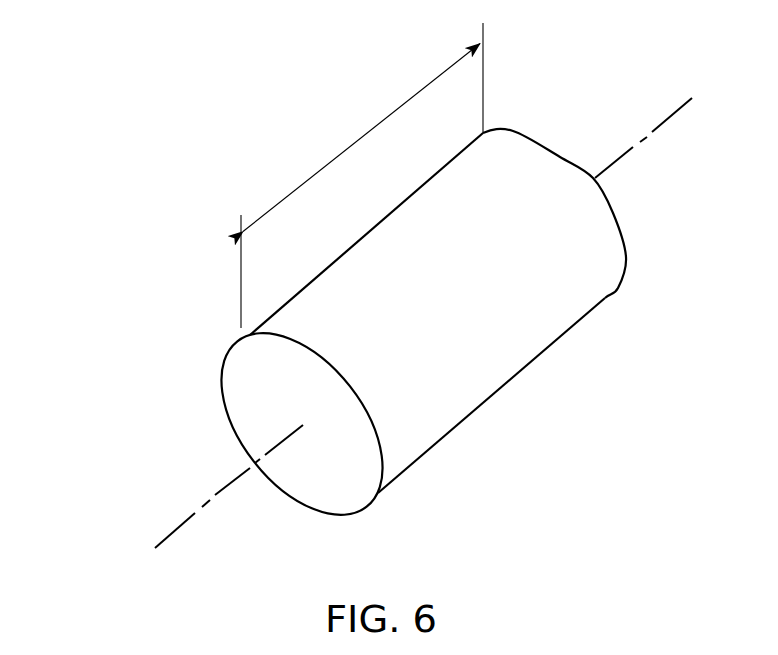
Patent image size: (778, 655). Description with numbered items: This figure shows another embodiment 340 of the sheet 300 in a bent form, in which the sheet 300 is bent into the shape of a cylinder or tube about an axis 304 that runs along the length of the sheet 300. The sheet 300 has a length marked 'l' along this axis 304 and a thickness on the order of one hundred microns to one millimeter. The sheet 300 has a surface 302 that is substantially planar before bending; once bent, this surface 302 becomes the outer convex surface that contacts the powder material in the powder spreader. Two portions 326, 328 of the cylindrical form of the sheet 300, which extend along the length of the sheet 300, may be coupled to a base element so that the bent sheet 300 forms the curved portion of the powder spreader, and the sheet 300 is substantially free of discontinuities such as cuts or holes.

The embodiment of the sheet in a bent form 340 is at (160, 128).
The sheet 300 is at (626, 246).
The surface 302 is at (522, 340).
The axis 304 is at (222, 490).
The portion 326 is at (247, 334).
The portion 328 is at (380, 495).